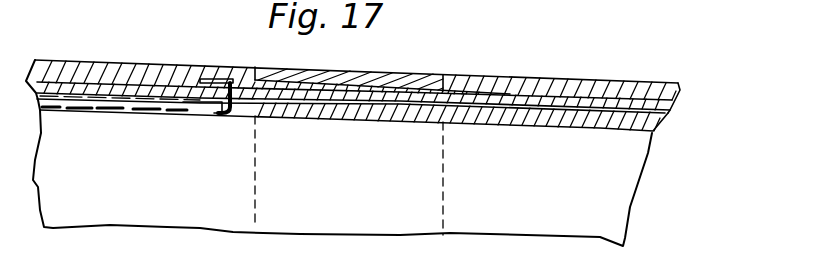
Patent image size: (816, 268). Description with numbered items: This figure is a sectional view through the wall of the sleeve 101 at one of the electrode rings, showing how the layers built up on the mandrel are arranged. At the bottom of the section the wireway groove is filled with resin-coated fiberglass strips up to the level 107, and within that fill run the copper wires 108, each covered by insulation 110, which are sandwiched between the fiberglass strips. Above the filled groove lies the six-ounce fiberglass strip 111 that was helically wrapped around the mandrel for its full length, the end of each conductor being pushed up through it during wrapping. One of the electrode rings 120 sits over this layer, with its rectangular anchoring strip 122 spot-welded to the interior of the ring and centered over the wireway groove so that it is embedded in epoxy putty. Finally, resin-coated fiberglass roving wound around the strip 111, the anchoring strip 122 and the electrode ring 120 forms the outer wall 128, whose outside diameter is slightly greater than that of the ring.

The sleeve 101 is at (510, 72).
The level 107 is at (557, 107).
The copper wires 108 is at (223, 112).
The insulation 110 is at (168, 107).
The strip of fiberglass 111 is at (672, 110).
The electrode rings 120 is at (403, 72).
The anchoring strips 122 is at (468, 75).
The wall 128 is at (678, 78).